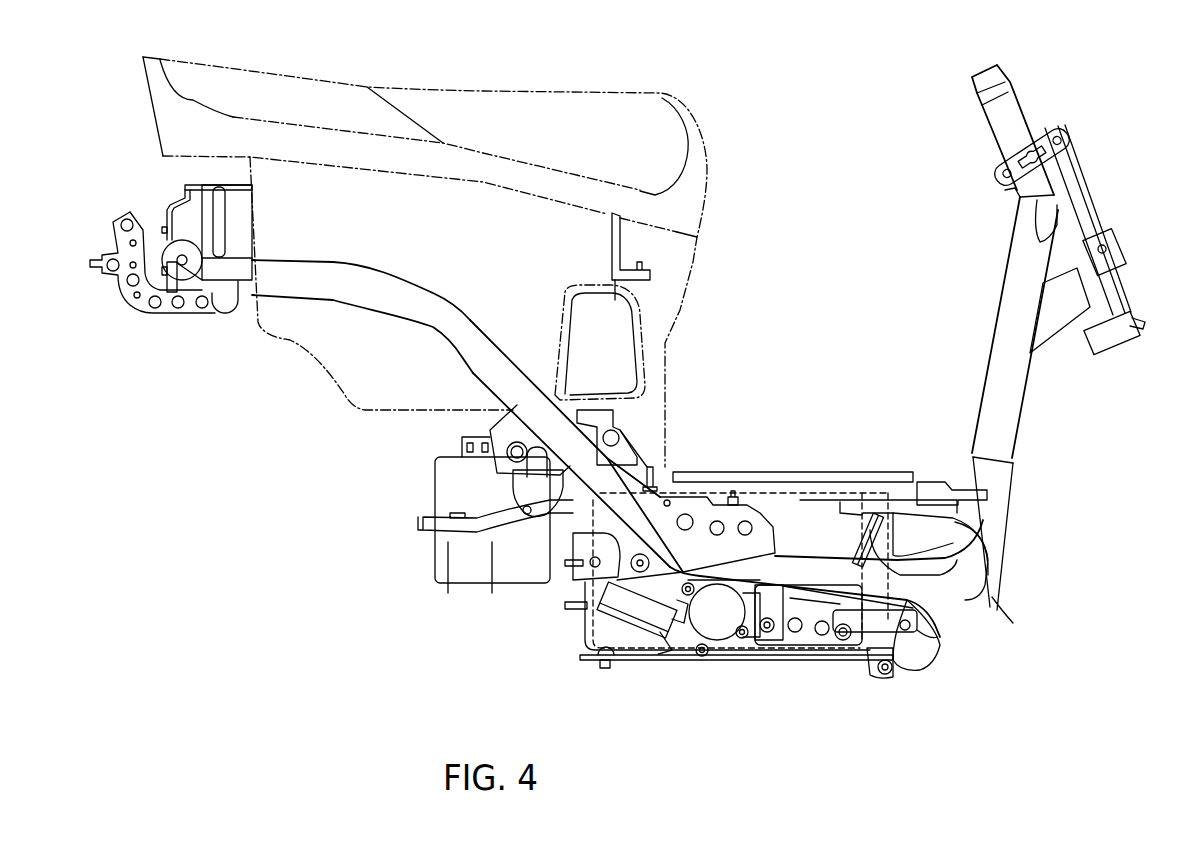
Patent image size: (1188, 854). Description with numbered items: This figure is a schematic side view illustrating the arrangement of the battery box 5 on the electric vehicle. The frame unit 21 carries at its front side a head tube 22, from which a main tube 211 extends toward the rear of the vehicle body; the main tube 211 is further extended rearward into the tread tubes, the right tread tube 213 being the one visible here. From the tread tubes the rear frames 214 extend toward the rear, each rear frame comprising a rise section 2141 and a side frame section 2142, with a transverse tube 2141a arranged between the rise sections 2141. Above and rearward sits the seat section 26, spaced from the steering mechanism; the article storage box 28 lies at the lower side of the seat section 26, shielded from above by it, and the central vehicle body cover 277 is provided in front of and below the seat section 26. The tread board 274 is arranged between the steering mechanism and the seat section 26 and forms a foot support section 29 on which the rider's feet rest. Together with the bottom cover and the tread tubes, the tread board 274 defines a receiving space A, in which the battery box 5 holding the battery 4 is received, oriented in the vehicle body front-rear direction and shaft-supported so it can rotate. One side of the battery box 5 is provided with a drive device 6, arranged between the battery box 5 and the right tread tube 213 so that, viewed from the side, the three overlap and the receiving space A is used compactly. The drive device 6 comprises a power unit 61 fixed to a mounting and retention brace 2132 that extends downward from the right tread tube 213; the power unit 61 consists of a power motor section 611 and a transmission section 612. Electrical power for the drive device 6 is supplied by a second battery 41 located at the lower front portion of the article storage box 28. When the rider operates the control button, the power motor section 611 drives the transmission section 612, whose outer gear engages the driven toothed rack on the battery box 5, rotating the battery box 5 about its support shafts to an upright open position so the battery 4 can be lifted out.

The battery 4 is at (765, 503).
The battery box 5 is at (583, 630).
The drive device 6 is at (685, 661).
The frame unit 21 is at (1026, 467).
The head tube 22 is at (1000, 122).
The seat section 26 is at (693, 127).
The article storage box 28 is at (300, 350).
The foot support section 29 is at (843, 468).
The second battery 41 is at (433, 563).
The power unit 61 is at (678, 671).
The main tube 211 is at (1022, 392).
The right tread tube 213 is at (808, 558).
The rear frames 214 is at (425, 378).
The tread board 274 is at (888, 468).
The central vehicle body cover 277 is at (682, 310).
The power motor section 611 is at (640, 617).
The transmission section 612 is at (710, 630).
The mounting and retention brace 2132 is at (810, 633).
The rise section 2141 is at (483, 360).
The side frame section 2142 is at (357, 293).
The transverse tube 2141a is at (633, 437).
The receiving space A is at (913, 540).